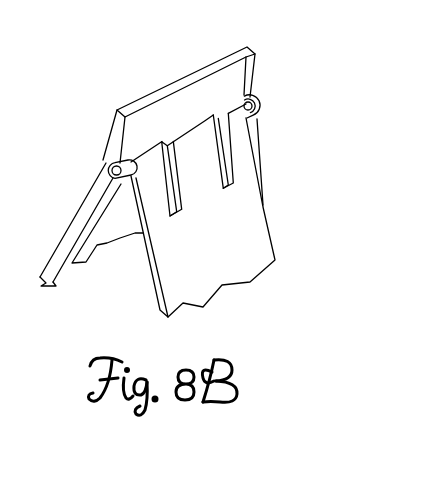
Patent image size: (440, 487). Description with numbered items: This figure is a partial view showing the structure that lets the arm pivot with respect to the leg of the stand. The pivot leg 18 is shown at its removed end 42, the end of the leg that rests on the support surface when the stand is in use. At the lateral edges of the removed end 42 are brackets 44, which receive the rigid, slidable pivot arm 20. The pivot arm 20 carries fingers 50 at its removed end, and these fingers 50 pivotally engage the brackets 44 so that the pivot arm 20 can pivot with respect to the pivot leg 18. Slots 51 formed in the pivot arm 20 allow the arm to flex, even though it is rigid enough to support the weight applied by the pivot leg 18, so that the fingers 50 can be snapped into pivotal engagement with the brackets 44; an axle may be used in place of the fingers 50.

The pivot leg 18 is at (172, 82).
The pivot arm 20 is at (223, 260).
The removed end 42 is at (256, 81).
The brackets 44 is at (108, 172).
The fingers 50 is at (113, 187).
The slots 51 is at (231, 149).